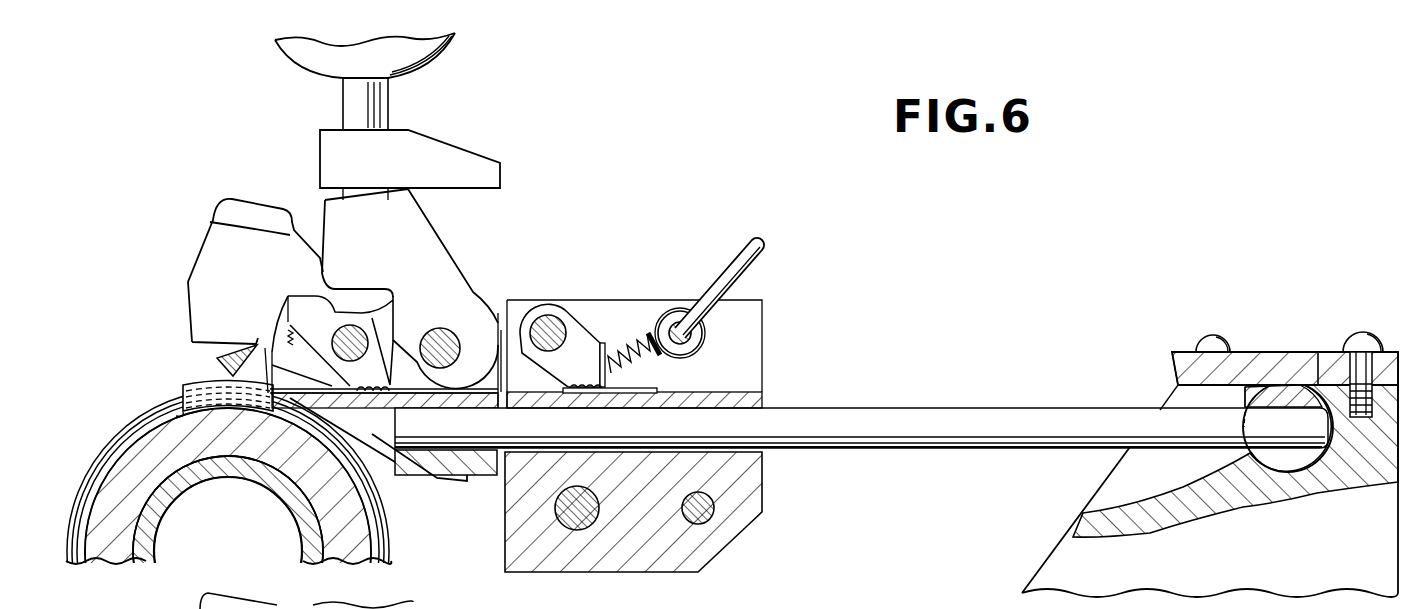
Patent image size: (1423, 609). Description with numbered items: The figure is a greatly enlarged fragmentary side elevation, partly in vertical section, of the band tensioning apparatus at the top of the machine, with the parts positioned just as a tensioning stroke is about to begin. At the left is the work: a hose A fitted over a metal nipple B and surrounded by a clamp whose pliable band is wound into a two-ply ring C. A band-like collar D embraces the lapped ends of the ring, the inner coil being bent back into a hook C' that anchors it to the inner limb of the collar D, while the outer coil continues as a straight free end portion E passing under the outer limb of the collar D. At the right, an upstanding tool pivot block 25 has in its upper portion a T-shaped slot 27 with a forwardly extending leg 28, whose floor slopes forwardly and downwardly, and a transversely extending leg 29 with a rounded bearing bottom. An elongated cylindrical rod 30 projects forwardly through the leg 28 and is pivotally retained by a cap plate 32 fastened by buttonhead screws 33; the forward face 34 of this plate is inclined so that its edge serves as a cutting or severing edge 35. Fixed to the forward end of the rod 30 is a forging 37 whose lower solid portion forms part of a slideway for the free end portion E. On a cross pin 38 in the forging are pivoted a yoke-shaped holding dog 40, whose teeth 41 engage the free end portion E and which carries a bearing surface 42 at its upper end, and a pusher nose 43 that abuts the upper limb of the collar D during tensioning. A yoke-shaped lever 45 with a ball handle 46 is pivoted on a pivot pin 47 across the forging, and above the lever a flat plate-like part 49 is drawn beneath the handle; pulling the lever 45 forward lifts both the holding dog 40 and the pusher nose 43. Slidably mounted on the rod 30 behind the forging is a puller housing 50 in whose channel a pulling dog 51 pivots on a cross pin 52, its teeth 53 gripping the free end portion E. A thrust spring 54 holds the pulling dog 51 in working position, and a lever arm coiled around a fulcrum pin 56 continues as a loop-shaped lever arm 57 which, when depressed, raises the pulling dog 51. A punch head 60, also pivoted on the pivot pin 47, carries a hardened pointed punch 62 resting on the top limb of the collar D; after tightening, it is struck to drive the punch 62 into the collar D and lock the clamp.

The tool pivot block 25 is at (1057, 567).
The T-shaped slot 27 is at (1101, 490).
The forwardly extending leg 28 is at (1226, 500).
The transversely extending leg 29 is at (1318, 385).
The elongated cylindrical rod 30 is at (962, 418).
The cap plate 32 is at (1262, 362).
The buttonhead screws 33 is at (1370, 345).
The forward face 34 is at (1178, 372).
The cutting or severing edge 35 is at (1175, 352).
The forging 37 is at (484, 472).
The cross pin 38 is at (356, 340).
The holding dog 40 is at (305, 314).
The teeth 41 is at (398, 412).
The bearing surface 42 is at (305, 295).
The pusher nose 43 is at (270, 352).
The lever 45 is at (422, 240).
The ball handle 46 is at (432, 56).
The pivot pin 47 is at (440, 338).
The top plate 49 is at (450, 152).
The puller housing 50 is at (765, 492).
The pulling dog 51 is at (583, 328).
The cross pin 52 is at (548, 325).
The teeth 53 is at (577, 393).
The thrust spring 54 is at (628, 352).
The fulcrum pin 56 is at (695, 333).
The loop-shaped lever arm 57 is at (760, 244).
The punch head 60 is at (208, 256).
The pointed punch 62 is at (215, 362).
The hose A is at (111, 556).
The nipple B is at (200, 484).
The two-ply ring C is at (225, 499).
The hook C' is at (146, 398).
The collar D is at (188, 383).
The free end portion E is at (645, 391).